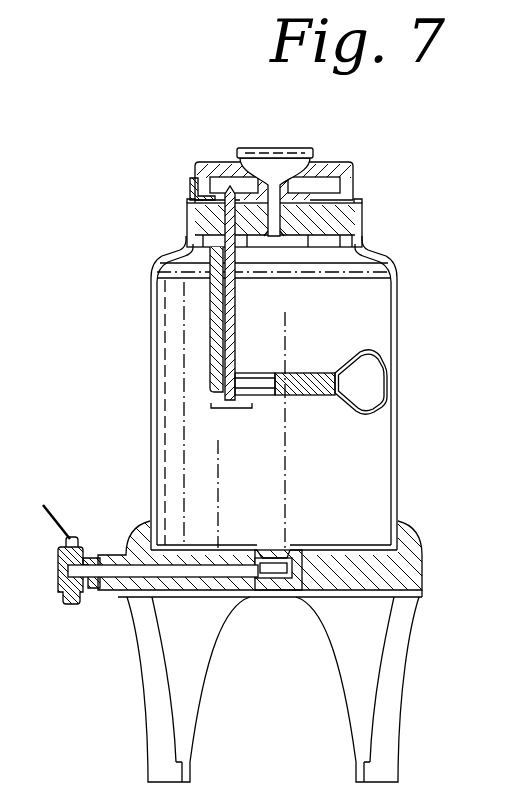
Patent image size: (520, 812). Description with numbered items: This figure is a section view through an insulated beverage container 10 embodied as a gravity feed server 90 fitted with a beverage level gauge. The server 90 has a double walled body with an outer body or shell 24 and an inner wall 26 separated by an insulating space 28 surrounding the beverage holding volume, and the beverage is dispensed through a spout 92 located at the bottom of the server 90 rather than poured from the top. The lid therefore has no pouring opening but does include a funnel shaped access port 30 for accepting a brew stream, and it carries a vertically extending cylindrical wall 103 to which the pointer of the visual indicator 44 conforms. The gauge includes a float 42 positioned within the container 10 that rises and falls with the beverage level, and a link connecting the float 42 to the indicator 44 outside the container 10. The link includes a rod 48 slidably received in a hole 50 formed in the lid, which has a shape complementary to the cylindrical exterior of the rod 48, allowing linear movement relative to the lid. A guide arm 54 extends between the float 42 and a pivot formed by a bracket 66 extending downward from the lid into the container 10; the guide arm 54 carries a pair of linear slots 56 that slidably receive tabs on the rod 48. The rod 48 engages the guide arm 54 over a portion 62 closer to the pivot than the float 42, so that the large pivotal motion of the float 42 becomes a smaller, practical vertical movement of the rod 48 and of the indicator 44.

The insulated beverage container 10 is at (384, 157).
The outer body or shell 24 is at (151, 390).
The inner wall 26 is at (167, 409).
The insulating space 28 is at (151, 447).
The funnel shaped access port 30 is at (283, 148).
The float 42 is at (363, 355).
The visual indicator 44 is at (186, 190).
The rod 48 is at (236, 305).
The hole 50 is at (237, 205).
The guide arm 54 is at (306, 373).
The linear slots 56 is at (262, 385).
The portion of the guide arm 62 is at (231, 420).
The bracket 66 is at (210, 302).
The gravity feed server 90 is at (97, 348).
The spout 92 is at (0, 10).
The cylindrical wall of the lid 103 is at (190, 204).